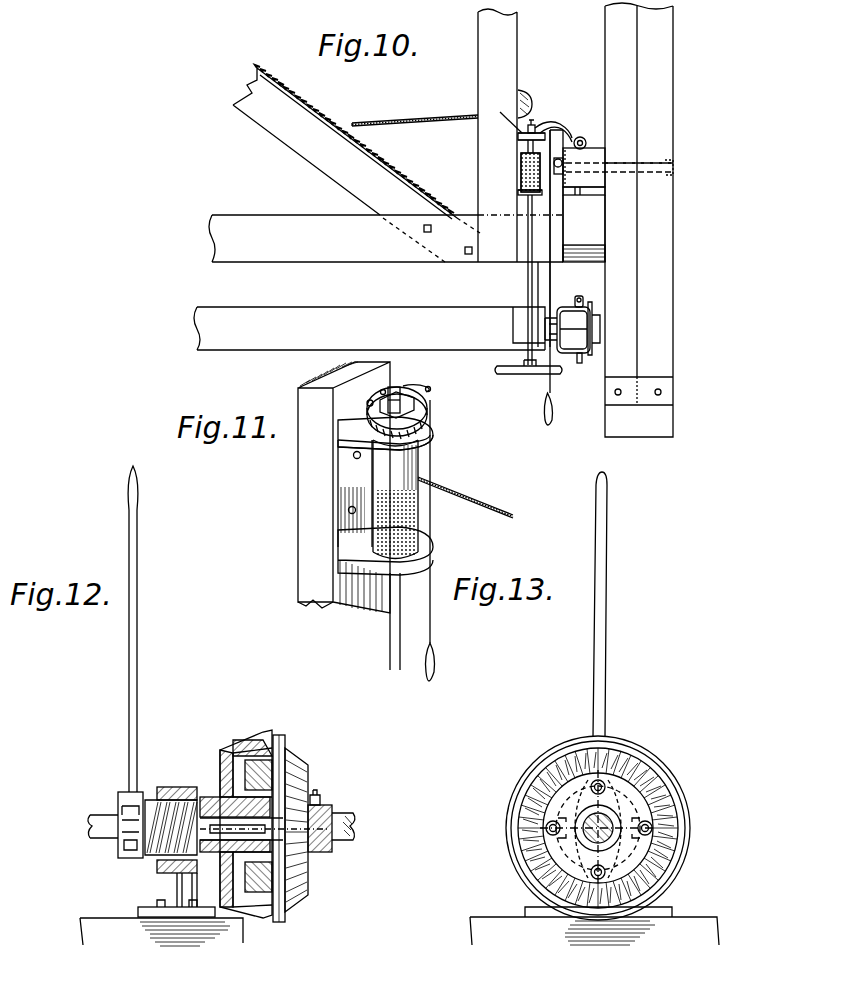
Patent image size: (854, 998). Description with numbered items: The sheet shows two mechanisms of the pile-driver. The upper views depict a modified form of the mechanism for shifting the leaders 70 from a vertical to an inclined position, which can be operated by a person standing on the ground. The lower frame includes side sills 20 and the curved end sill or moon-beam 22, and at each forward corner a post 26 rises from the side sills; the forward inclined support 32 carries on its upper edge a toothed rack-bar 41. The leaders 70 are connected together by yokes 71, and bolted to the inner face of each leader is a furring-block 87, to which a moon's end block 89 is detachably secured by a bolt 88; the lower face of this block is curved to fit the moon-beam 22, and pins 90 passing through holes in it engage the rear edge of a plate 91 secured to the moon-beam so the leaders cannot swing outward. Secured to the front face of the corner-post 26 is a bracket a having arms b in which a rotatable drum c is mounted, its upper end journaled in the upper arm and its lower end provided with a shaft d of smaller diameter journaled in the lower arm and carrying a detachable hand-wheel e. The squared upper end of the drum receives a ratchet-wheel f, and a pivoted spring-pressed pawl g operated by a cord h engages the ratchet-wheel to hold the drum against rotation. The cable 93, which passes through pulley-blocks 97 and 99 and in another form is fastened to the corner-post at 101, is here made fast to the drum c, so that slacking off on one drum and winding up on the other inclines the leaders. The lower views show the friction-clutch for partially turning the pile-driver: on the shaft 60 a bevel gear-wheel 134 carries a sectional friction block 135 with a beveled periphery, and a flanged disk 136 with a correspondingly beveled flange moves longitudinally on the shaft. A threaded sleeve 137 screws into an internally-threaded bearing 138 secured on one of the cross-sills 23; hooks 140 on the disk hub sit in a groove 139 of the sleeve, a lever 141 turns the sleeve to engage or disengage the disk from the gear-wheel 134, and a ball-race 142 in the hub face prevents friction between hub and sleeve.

In FIG. 10, the side sills 20 is at (326, 260).
In FIG. 10, the end sill (moon-beam) 22 is at (584, 228).
In FIG. 12, the intermediate cross-sills 23 is at (104, 936).
In FIG. 13, the intermediate cross-sills 23 is at (483, 933).
In FIG. 10, the posts 26 is at (518, 70).
In FIG. 11, the posts 26 is at (303, 507).
In FIG. 10, the forward inclined support 32 is at (286, 142).
In FIG. 10, the rack-bar 41 is at (410, 189).
In FIG. 12, the shaft 60 is at (348, 820).
In FIG. 13, the shaft 60 is at (607, 818).
In FIG. 10, the leaders 70 is at (669, 295).
In FIG. 10, the yokes 71 is at (667, 396).
In FIG. 10, the furring-block 87 is at (607, 78).
In FIG. 10, the bolt 88 is at (646, 180).
In FIG. 10, the moon's end block 89 is at (605, 160).
In FIG. 10, the pins 90 is at (582, 137).
In FIG. 10, the plate 91 is at (604, 195).
In FIG. 10, the cable 93 is at (427, 118).
In FIG. 11, the cable 93 is at (480, 500).
In FIG. 10, the pulley-block 97 is at (566, 122).
In FIG. 10, the pulley-block 99 is at (528, 103).
In FIG. 10, the cable fastening 101 is at (520, 173).
In FIG. 11, the cable fastening 101 is at (420, 462).
In FIG. 12, the bevel gear-wheel 134 is at (305, 775).
In FIG. 13, the bevel gear-wheel 134 is at (621, 757).
In FIG. 12, the friction block or head 135 is at (280, 748).
In FIG. 13, the friction block or head 135 is at (670, 797).
In FIG. 12, the flanged disk 136 is at (237, 748).
In FIG. 13, the flanged disk 136 is at (557, 740).
In FIG. 12, the sleeve 137 is at (310, 797).
In FIG. 12, the internally-screw-threaded bearing 138 is at (165, 798).
In FIG. 13, the internally-screw-threaded bearing 138 is at (670, 909).
In FIG. 12, the groove 139 is at (190, 798).
In FIG. 12, the hooks or latches 140 is at (160, 872).
In FIG. 12, the lever 141 is at (136, 704).
In FIG. 13, the lever 141 is at (605, 668).
In FIG. 12, the ball-race 142 is at (180, 890).
In FIG. 10, the bracket a is at (518, 153).
In FIG. 11, the bracket a is at (355, 493).
In FIG. 10, the arms b is at (518, 138).
In FIG. 11, the arms b is at (370, 427).
In FIG. 10, the rotatable drum c is at (522, 168).
In FIG. 11, the rotatable drum c is at (395, 499).
In FIG. 10, the shaft d is at (520, 268).
In FIG. 11, the shaft d is at (392, 633).
In FIG. 10, the detachable hand-wheel e is at (514, 373).
In FIG. 10, the ratchet-wheel f is at (533, 123).
In FIG. 11, the ratchet-wheel f is at (428, 420).
In FIG. 10, the spring-pressed pawl g is at (506, 113).
In FIG. 11, the spring-pressed pawl g is at (420, 385).
In FIG. 10, the cord h is at (556, 284).
In FIG. 11, the cord h is at (436, 552).